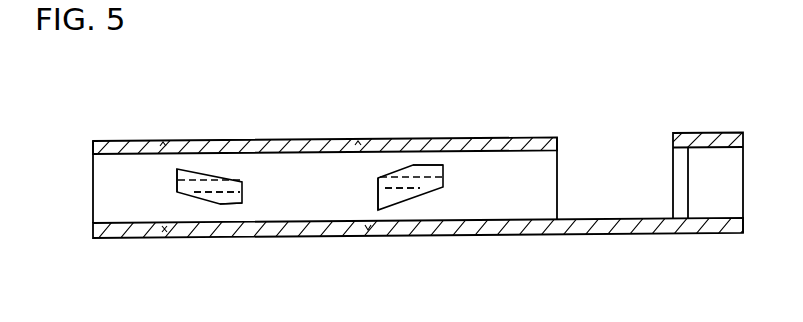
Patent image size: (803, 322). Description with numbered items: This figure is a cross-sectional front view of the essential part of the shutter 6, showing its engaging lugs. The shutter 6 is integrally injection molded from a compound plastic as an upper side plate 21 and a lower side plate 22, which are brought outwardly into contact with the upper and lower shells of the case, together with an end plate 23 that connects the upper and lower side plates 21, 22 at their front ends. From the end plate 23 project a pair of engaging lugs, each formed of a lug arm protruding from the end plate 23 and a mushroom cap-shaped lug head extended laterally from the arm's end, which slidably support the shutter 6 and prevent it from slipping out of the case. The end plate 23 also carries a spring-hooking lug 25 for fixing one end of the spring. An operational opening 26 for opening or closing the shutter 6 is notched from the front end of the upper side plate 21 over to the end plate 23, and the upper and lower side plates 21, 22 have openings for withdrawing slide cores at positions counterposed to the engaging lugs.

The shutter 6 is at (401, 176).
The upper side plate 21 is at (518, 137).
The lower side plate 22 is at (520, 236).
The end plate 23 is at (93, 195).
The spring-hooking lug 25 is at (690, 198).
The operational opening 26 is at (673, 160).